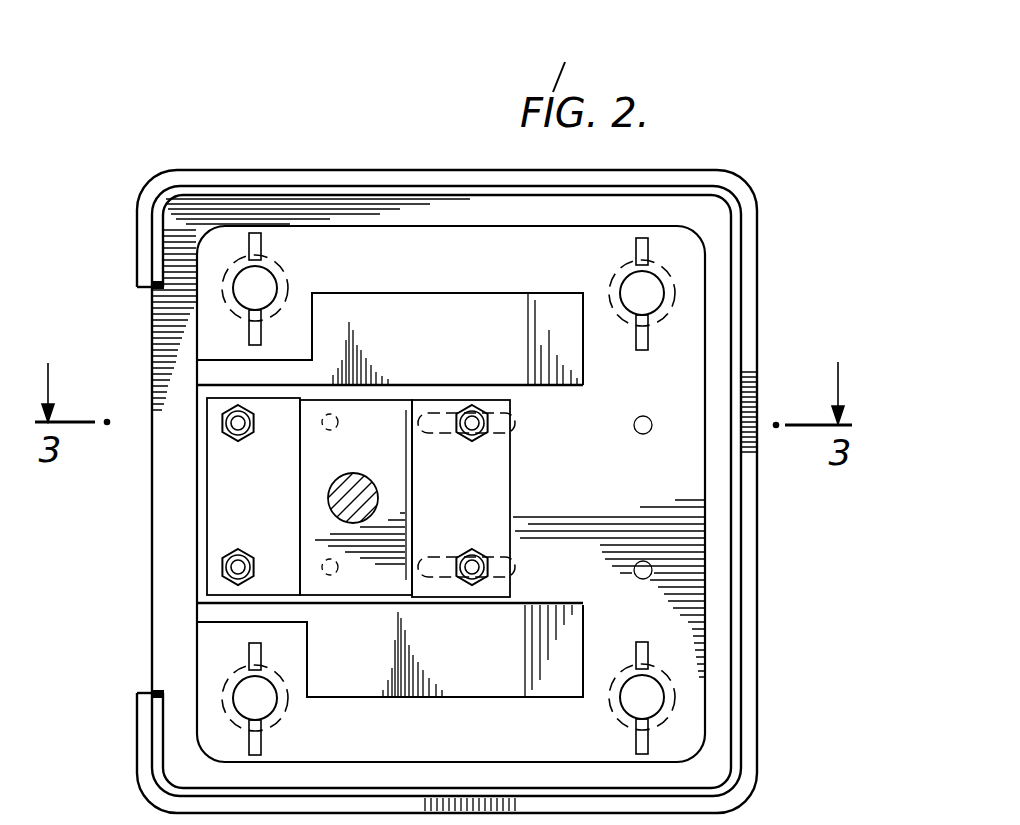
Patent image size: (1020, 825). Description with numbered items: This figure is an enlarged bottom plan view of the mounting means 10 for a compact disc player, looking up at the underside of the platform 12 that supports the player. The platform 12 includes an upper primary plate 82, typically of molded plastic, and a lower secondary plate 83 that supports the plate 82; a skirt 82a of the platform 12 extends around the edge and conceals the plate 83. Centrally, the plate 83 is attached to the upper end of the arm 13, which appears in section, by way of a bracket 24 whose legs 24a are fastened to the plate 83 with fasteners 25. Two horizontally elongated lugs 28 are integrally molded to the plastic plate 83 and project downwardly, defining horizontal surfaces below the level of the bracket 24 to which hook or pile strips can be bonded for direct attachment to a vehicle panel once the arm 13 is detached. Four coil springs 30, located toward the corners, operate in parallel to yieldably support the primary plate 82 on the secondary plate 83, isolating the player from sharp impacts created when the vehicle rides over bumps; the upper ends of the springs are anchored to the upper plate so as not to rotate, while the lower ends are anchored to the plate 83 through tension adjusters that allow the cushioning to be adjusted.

The mounting means 10 is at (203, 126).
The platform 12 is at (772, 203).
The arm 13 is at (365, 492).
The bracket 24 is at (190, 508).
The legs 24a is at (213, 464).
The fasteners 25 is at (221, 418).
The lugs 28 is at (424, 322).
The coil springs 30 is at (222, 298).
The upper primary plate 82 is at (150, 578).
The skirt 82a is at (752, 617).
The lower secondary plate 83 is at (705, 518).